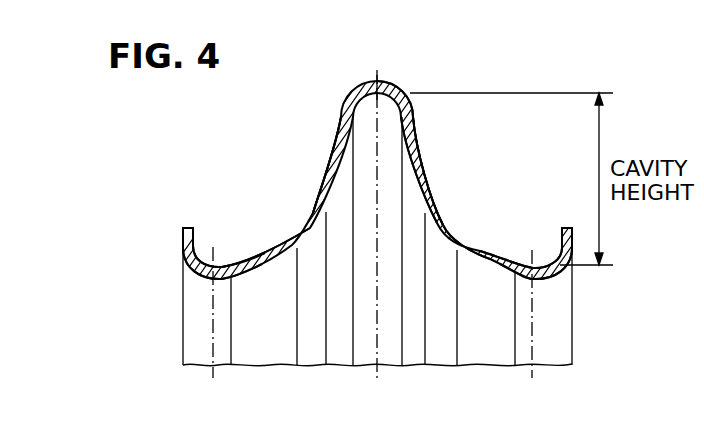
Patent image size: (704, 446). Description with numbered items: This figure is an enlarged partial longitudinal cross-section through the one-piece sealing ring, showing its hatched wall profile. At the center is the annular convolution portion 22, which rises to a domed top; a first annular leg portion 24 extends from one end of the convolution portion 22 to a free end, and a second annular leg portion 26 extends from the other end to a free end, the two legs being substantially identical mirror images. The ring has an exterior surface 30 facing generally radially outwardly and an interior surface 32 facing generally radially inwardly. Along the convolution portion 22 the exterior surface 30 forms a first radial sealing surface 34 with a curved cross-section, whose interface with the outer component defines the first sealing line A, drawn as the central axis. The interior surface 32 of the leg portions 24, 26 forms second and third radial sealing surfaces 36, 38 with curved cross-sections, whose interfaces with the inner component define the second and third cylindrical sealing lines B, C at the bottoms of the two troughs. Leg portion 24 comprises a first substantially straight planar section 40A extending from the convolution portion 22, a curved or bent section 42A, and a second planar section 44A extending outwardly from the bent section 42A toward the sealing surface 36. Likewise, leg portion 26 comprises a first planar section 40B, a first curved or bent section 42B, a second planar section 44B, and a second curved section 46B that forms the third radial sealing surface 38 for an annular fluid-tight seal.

The annular convolution portion 22 is at (352, 88).
The first annular leg portion 24 is at (339, 138).
The second annular leg portion 26 is at (428, 144).
The exterior surface 30 is at (405, 92).
The interior surface 32 is at (424, 138).
The first radial sealing surface 34 is at (378, 84).
The second radial sealing surface 36 is at (218, 278).
The third radial sealing surface 38 is at (545, 282).
The first substantially straight planar section 40A is at (332, 163).
The first substantially straight planar section 40B is at (426, 158).
The curved or bent section 42A is at (300, 231).
The first curved or bent section 42B is at (448, 226).
The second planar section 44A is at (252, 255).
The second planar section 44B is at (483, 251).
The second curved section 46B is at (202, 233).
The first sealing line A is at (377, 378).
The second cylindrical sealing line B is at (213, 378).
The third cylindrical sealing line C is at (532, 378).